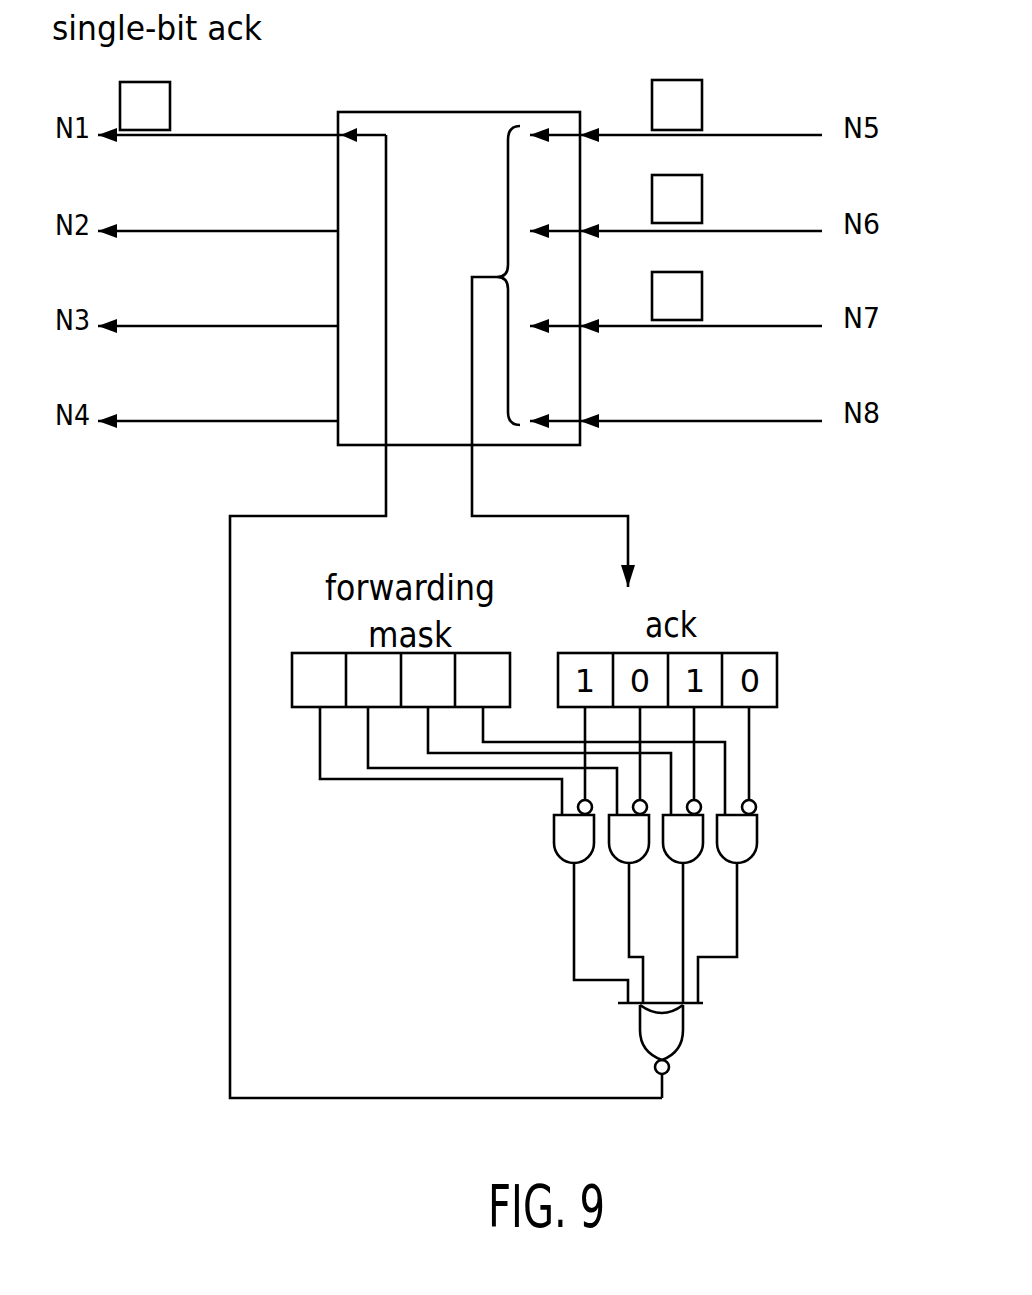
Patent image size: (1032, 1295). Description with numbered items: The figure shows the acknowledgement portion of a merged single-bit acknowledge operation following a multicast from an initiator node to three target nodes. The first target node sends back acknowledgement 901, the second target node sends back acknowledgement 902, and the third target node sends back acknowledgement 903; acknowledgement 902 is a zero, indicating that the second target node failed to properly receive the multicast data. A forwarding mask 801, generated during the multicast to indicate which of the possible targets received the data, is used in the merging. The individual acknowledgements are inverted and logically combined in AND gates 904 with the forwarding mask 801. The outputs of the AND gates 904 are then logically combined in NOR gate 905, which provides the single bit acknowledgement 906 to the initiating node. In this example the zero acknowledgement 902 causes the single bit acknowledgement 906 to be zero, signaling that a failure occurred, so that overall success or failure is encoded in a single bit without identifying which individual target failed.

The single bit acknowledgement 906 is at (171, 98).
The acknowledgement 901 is at (702, 85).
The acknowledgement 902 is at (702, 182).
The acknowledgement 903 is at (702, 278).
The forwarding mask 801 is at (296, 707).
The AND gates 904 is at (770, 855).
The NOR gate 905 is at (684, 1030).